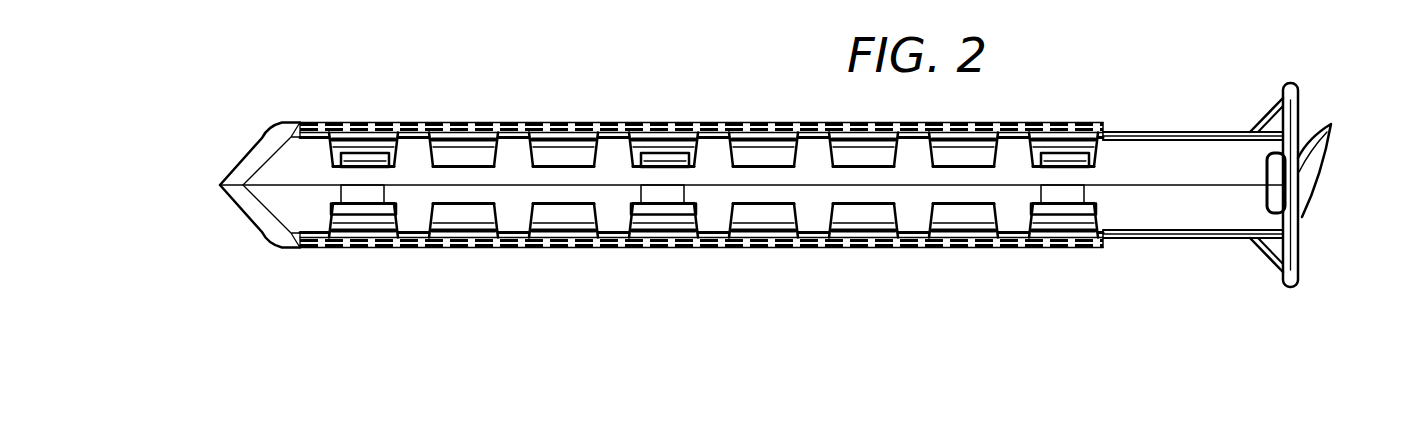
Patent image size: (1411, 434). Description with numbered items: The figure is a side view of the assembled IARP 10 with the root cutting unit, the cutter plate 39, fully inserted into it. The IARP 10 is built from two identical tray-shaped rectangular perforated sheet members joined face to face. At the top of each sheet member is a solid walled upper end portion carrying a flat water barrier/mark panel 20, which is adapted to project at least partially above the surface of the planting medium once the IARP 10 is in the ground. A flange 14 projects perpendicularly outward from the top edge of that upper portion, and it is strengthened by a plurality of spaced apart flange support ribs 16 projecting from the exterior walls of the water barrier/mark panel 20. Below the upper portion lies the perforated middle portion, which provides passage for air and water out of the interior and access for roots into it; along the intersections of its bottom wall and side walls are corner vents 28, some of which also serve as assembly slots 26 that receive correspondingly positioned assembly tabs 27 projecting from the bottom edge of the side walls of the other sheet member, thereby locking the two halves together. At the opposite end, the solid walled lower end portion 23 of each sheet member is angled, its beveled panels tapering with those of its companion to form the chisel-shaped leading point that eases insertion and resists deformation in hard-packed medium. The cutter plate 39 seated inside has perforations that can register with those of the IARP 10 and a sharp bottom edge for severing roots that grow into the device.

The IARP 10 is at (655, 108).
The solid walled lower end portion 23 is at (253, 159).
The assembly slot 26 is at (686, 152).
The assembly tab 27 is at (667, 198).
The corner vent 28 is at (962, 215).
The water barrier/mark panel 20 is at (1180, 132).
The flange support rib 16 is at (1273, 122).
The cutter plate 39 is at (1323, 162).
The flange 14 is at (1293, 253).